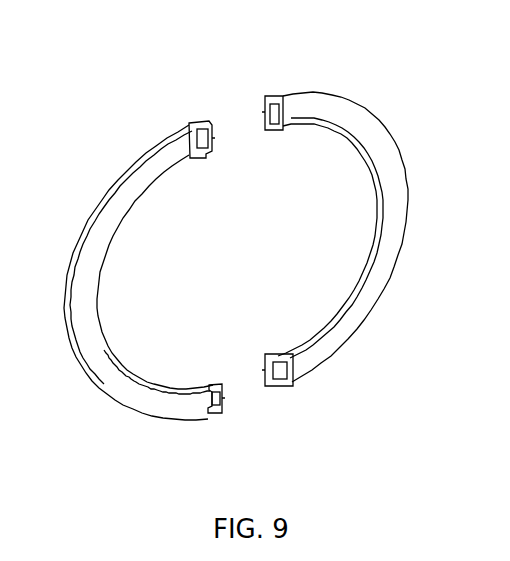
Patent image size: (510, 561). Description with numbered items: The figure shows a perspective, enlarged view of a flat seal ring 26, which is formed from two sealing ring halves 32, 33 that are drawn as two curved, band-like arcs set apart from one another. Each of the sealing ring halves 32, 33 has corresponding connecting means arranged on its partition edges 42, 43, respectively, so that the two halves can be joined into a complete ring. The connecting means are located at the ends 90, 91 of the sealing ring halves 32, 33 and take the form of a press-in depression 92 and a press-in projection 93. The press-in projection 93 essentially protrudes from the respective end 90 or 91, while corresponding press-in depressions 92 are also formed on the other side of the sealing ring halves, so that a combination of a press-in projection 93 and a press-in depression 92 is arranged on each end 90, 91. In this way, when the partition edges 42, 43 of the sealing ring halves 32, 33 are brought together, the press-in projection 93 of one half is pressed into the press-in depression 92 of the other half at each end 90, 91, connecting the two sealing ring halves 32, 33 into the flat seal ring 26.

The ring assembly 26 is at (391, 71).
The sealing ring half 32 is at (400, 218).
The sealing ring half 33 is at (87, 368).
The partition edge 42 is at (266, 96).
The partition edge 43 is at (201, 118).
The end 90 is at (258, 123).
The end 91 is at (224, 390).
The press-in depression 92 is at (240, 254).
The press-in projection 93 is at (212, 154).